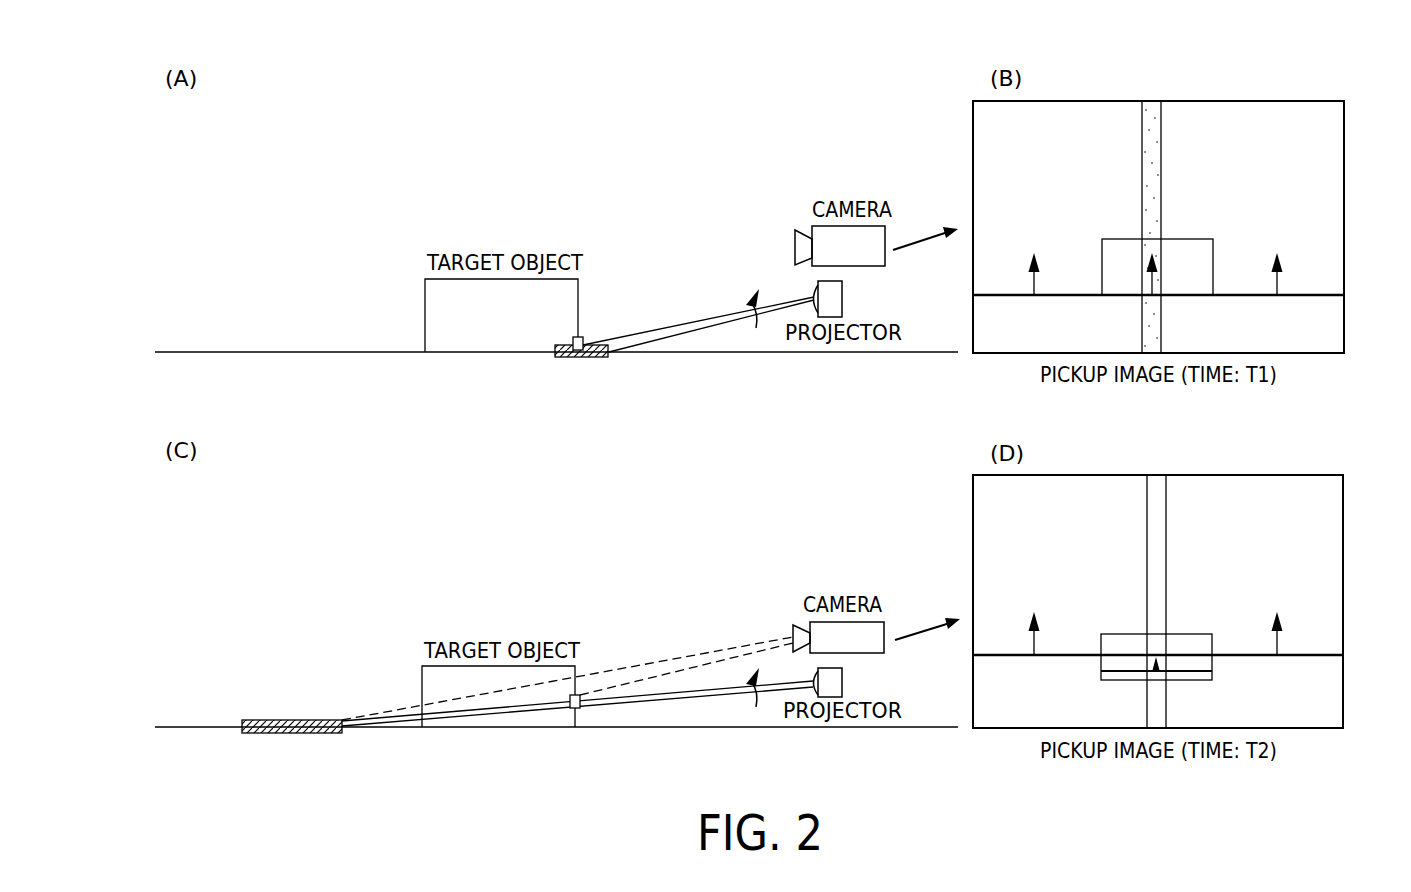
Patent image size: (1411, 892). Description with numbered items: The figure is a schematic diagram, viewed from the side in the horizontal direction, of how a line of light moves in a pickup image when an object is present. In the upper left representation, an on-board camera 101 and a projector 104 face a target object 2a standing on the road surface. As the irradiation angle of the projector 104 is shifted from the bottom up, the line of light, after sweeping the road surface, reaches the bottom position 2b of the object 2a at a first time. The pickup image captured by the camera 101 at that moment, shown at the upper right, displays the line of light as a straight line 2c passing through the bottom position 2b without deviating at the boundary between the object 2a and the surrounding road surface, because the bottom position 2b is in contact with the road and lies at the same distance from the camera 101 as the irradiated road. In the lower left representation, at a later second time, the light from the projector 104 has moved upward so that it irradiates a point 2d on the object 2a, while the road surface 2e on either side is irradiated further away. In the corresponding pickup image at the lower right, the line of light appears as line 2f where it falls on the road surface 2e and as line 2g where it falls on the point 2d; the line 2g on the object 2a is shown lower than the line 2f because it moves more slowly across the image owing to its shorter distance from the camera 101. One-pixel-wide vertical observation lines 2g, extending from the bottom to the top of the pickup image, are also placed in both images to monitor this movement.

The object 2a is at (425, 313).
The bottom position 2b is at (583, 358).
The line of light 2c is at (1340, 295).
The point 2d is at (578, 729).
The road surface 2e is at (292, 735).
The line of light 2f is at (1072, 655).
The line of light 2g is at (1161, 134).
The camera 101 is at (795, 242).
The projector 104 is at (842, 297).